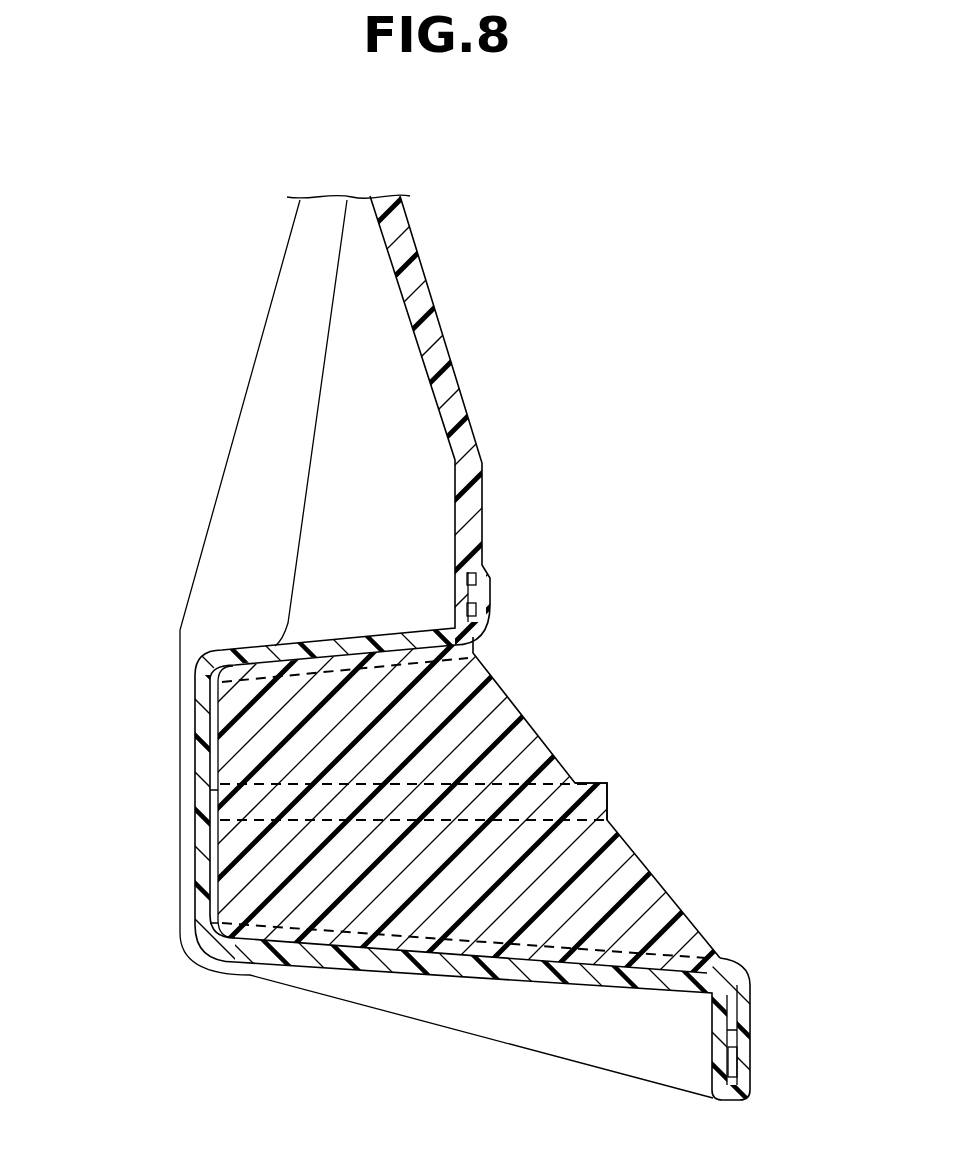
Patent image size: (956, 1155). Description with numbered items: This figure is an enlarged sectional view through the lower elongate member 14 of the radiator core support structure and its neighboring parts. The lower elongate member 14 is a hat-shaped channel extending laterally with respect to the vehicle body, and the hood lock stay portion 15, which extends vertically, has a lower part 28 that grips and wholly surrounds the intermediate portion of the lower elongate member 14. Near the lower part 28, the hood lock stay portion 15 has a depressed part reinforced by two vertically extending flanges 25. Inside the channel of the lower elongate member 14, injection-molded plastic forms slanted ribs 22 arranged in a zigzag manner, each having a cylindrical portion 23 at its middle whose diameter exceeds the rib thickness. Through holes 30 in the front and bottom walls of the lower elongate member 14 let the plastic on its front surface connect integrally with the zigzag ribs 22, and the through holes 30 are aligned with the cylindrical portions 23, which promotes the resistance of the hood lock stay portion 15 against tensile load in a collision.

The lower elongate member 14 is at (437, 957).
The hood lock stay portion 15 is at (430, 318).
The slanted ribs 22 is at (667, 887).
The cylindrical portion 23 is at (608, 805).
The flanges 25 is at (230, 515).
The lower part 28 is at (200, 911).
The through holes 30 is at (210, 790).